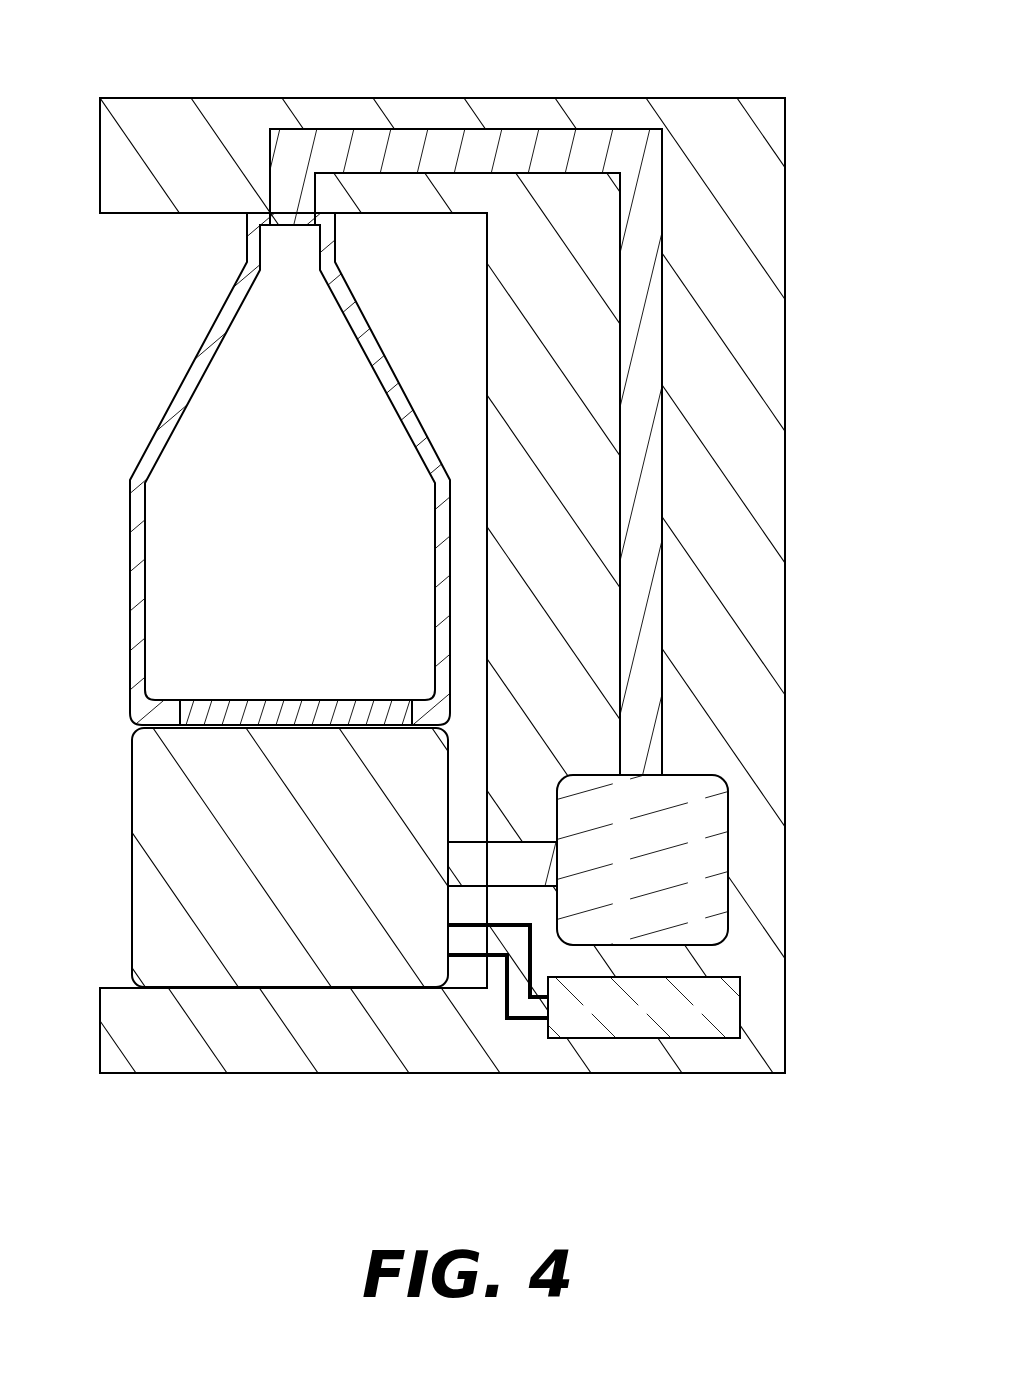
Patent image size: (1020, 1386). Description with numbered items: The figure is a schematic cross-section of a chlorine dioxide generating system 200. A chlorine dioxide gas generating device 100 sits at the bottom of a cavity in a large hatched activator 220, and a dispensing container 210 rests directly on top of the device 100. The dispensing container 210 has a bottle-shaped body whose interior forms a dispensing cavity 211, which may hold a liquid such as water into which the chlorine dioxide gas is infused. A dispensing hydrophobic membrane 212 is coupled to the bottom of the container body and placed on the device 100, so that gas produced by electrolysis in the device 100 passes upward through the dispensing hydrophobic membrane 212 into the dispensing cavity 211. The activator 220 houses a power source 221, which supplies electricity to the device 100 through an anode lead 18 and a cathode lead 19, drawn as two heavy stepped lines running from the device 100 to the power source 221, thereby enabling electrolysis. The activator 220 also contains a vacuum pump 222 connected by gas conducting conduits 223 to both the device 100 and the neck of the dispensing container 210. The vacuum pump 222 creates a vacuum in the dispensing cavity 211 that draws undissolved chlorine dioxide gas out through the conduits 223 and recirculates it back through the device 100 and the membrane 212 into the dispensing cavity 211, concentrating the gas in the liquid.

The chlorine dioxide generating system 200 is at (808, 77).
The activator 220 is at (740, 456).
The gas conducting conduits 223 is at (501, 166).
The dispensing container 210 is at (184, 400).
The dispensing cavity 211 is at (320, 552).
The dispensing hydrophobic membrane 212 is at (234, 717).
The chlorine dioxide gas generating device 100 is at (180, 866).
The vacuum pump 222 is at (665, 876).
The power source 221 is at (675, 1022).
The cathode lead 19 is at (506, 1003).
The anode lead 18 is at (540, 1005).